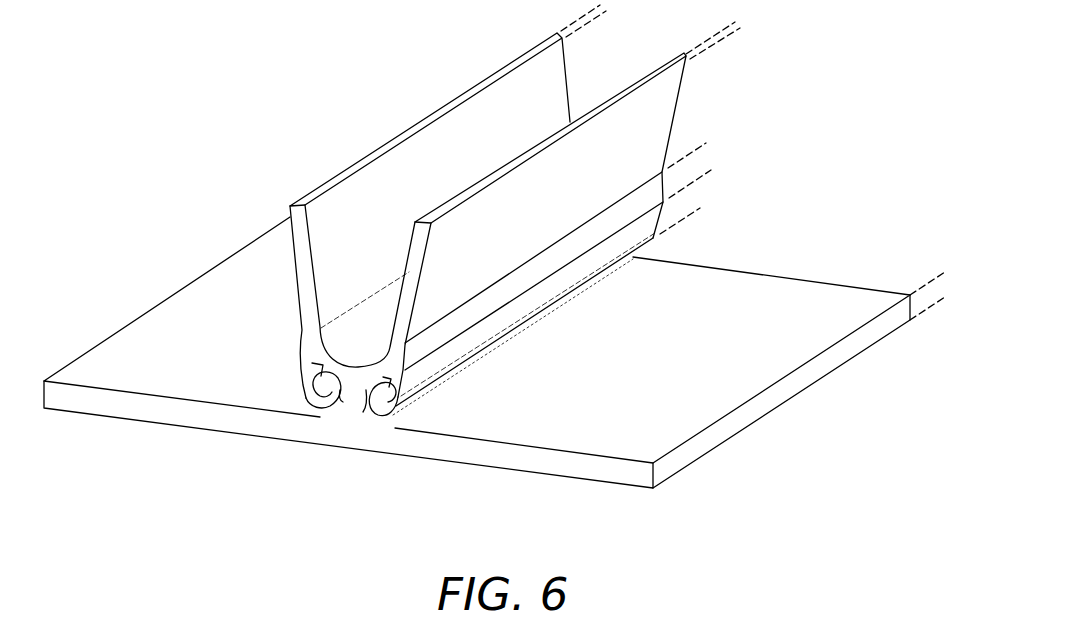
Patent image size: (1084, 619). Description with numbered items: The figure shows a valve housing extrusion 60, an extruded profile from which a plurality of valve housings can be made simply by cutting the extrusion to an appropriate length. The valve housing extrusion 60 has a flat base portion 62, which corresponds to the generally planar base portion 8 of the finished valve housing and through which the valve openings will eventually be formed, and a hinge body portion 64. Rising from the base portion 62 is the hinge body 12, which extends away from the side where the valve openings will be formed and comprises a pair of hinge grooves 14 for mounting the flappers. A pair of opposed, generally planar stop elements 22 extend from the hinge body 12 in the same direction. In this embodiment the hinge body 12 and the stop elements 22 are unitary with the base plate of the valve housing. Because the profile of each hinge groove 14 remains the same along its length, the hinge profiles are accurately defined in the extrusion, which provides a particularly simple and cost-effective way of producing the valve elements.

The base portion 8 is at (494, 383).
The hinge body 12 is at (343, 402).
The hinge grooves 14 is at (322, 415).
The stop elements 22 is at (517, 84).
The valve housing extrusion 60 is at (568, 483).
The base portion 62 is at (788, 291).
The hinge body portion 64 is at (679, 117).